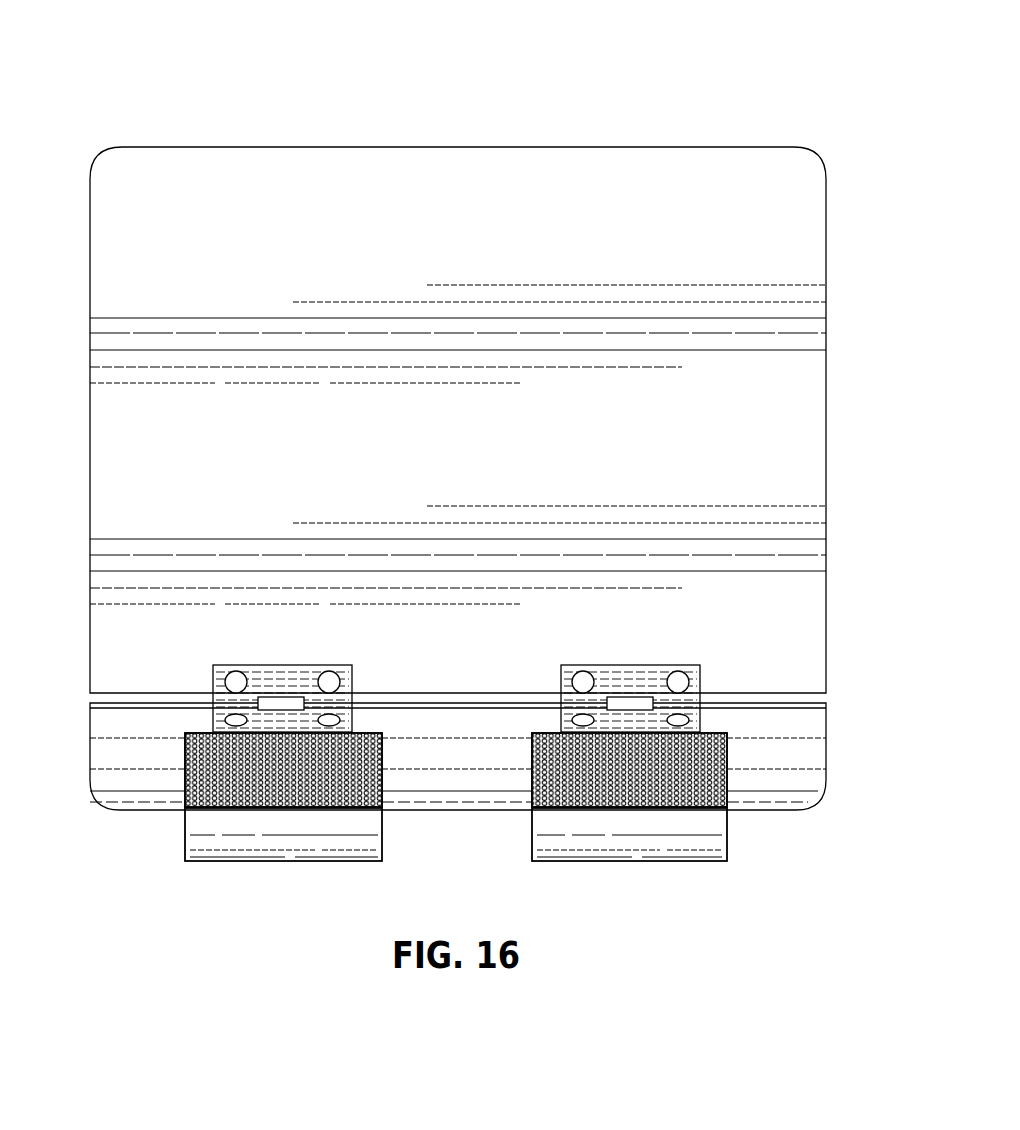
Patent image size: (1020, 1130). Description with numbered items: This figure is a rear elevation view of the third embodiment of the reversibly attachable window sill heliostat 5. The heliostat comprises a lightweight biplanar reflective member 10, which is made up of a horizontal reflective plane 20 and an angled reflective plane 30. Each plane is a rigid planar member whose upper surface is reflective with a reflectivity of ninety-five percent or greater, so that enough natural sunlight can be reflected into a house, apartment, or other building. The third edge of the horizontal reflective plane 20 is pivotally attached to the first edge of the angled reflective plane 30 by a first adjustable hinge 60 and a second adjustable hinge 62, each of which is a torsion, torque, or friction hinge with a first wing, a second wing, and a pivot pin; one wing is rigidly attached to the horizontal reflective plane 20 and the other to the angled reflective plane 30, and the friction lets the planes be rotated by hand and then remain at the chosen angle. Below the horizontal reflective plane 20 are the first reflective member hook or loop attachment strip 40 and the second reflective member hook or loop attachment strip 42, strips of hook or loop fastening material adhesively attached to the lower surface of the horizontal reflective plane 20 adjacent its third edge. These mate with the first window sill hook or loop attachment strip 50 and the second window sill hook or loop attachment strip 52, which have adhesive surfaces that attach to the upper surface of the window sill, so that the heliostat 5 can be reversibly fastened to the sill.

The reversibly attachable window sill heliostat 5 is at (125, 88).
The lightweight biplanar reflective member 10 is at (515, 492).
The angled reflective plane 30 is at (826, 333).
The horizontal reflective plane 20 is at (826, 742).
The second adjustable hinge 62 is at (222, 671).
The first adjustable hinge 60 is at (700, 683).
The second reflective member hook or loop attachment strip 42 is at (200, 792).
The first reflective member hook or loop attachment strip 40 is at (713, 790).
The second window sill hook or loop attachment strip 52 is at (213, 857).
The first window sill hook or loop attachment strip 50 is at (677, 855).